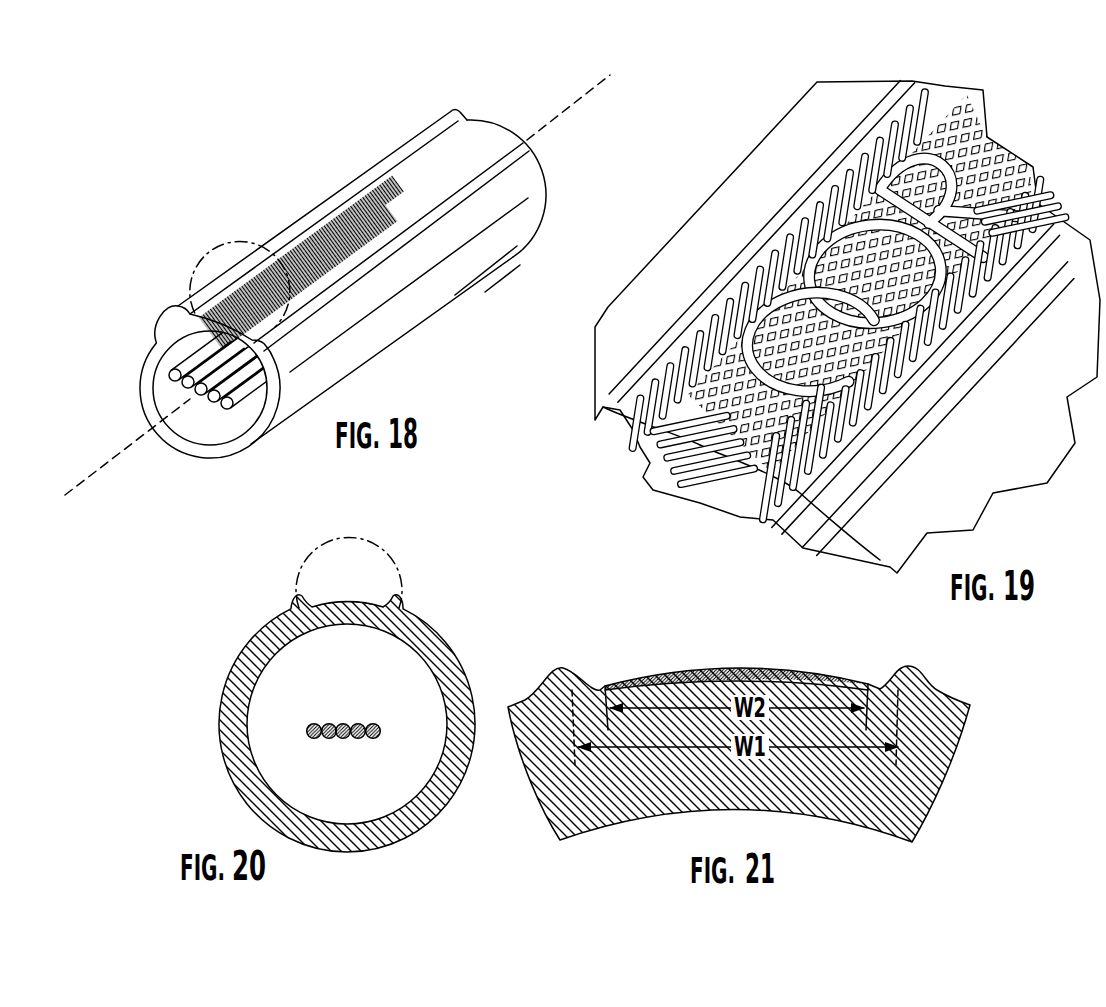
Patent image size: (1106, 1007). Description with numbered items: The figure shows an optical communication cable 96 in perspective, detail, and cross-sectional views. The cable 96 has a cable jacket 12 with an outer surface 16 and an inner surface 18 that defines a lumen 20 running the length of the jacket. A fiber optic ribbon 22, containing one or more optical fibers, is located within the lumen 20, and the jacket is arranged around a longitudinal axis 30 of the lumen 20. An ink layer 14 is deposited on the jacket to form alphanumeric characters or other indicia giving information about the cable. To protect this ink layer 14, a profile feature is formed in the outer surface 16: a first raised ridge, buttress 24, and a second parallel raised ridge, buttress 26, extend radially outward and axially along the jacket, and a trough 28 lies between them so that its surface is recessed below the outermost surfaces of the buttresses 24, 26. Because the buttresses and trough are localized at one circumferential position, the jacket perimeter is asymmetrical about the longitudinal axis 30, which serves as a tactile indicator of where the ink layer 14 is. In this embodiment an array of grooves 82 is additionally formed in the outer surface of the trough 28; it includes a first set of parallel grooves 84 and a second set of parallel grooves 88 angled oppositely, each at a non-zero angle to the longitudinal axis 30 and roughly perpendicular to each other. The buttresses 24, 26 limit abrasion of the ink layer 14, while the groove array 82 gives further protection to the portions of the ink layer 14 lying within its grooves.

In FIG. 18, the cable jacket 12 is at (147, 376).
In FIG. 20, the cable jacket 12 is at (235, 758).
In FIG. 18, the ink layer 14 is at (285, 226).
In FIG. 19, the ink layer 14 is at (820, 226).
In FIG. 20, the ink layer 14 is at (347, 576).
In FIG. 21, the ink layer 14 is at (710, 646).
In FIG. 18, the outer surface 16 is at (403, 307).
In FIG. 20, the outer surface 16 is at (442, 628).
In FIG. 20, the inner surface 18 is at (252, 698).
In FIG. 18, the lumen 20 is at (220, 427).
In FIG. 20, the lumen 20 is at (380, 774).
In FIG. 18, the fiber optic ribbon 22 is at (170, 380).
In FIG. 20, the fiber optic ribbon 22 is at (388, 728).
In FIG. 18, the buttress 24 is at (379, 158).
In FIG. 19, the buttress 24 is at (898, 113).
In FIG. 21, the buttress 24 is at (573, 678).
In FIG. 18, the buttress 26 is at (528, 150).
In FIG. 19, the buttress 26 is at (1068, 262).
In FIG. 21, the buttress 26 is at (913, 668).
In FIG. 18, the trough 28 is at (474, 140).
In FIG. 18, the longitudinal axis 30 is at (548, 112).
In FIG. 18, the array of grooves 82 is at (225, 287).
In FIG. 19, the array of grooves 82 is at (1013, 102).
In FIG. 19, the first set of parallel grooves 84 is at (702, 405).
In FIG. 19, the second set of parallel grooves 88 is at (799, 460).
In FIG. 18, the optical communication cable 96 is at (330, 170).